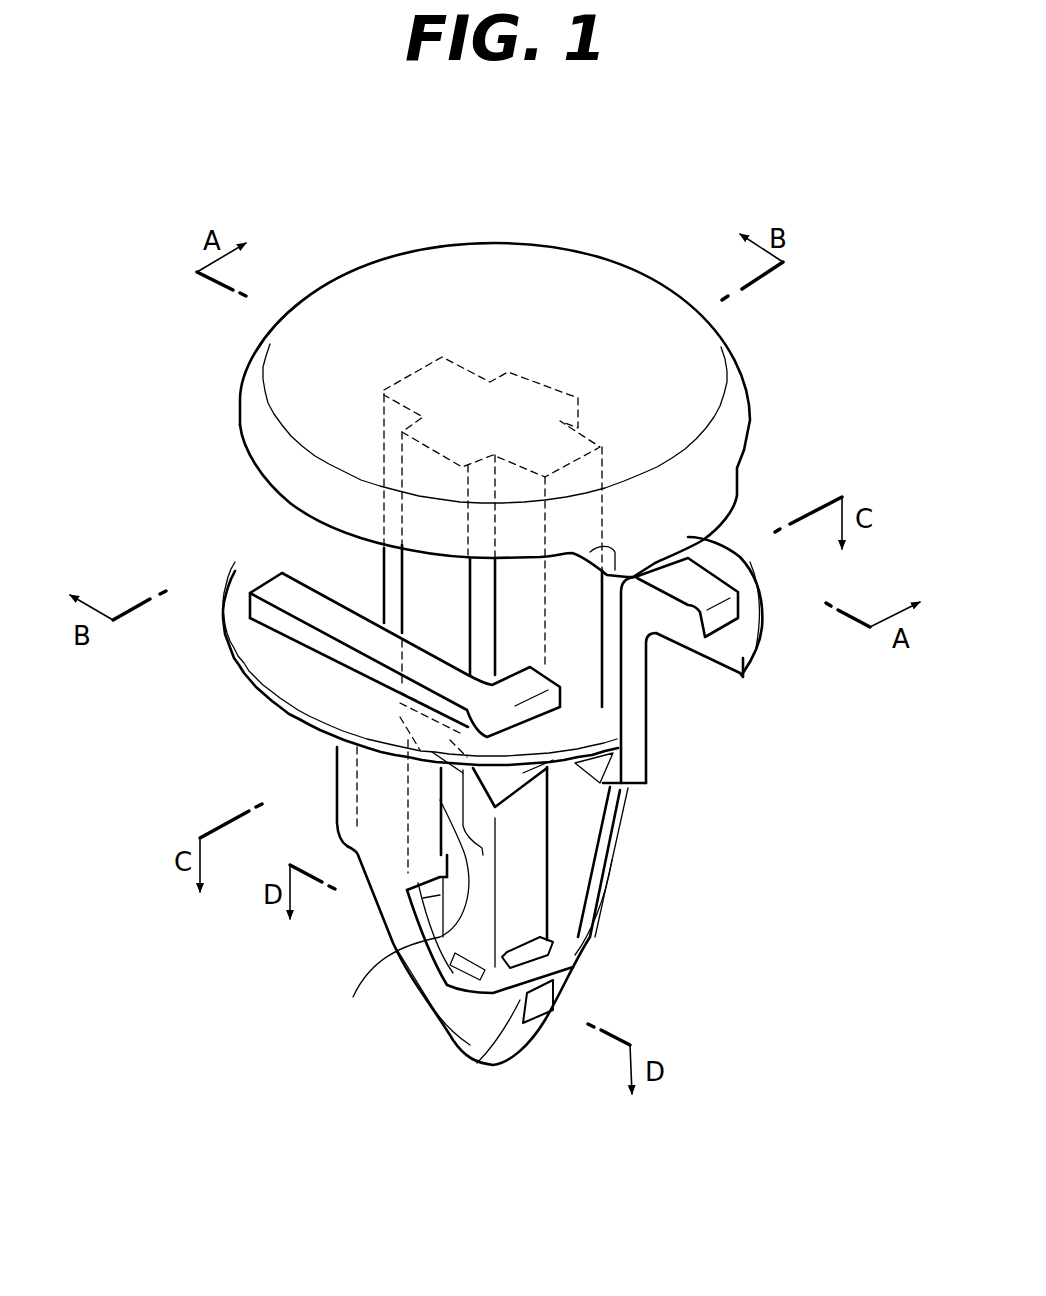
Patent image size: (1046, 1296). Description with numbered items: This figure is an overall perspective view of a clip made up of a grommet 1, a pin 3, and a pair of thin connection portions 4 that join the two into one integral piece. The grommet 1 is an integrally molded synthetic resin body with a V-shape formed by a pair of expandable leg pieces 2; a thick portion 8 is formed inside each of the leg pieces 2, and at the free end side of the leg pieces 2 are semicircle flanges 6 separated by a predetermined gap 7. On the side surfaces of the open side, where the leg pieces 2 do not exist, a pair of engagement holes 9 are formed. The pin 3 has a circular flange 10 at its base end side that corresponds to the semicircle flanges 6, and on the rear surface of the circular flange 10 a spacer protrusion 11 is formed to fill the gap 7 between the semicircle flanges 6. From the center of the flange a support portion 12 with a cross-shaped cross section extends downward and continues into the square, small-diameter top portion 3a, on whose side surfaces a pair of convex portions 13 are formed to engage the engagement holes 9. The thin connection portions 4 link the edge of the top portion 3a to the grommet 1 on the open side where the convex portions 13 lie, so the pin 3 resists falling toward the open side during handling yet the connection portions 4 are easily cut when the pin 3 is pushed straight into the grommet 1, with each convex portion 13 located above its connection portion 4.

The grommet 1 is at (430, 1032).
The leg pieces 2 is at (347, 793).
The pin 3 is at (515, 405).
The top portion 3a is at (580, 927).
The thin connection portions 4 is at (520, 1000).
The semicircle flanges 6 is at (302, 700).
The gap 7 is at (345, 566).
The thick portion 8 is at (353, 997).
The engagement holes 9 is at (533, 1007).
The circular flange 10 is at (445, 268).
The spacer protrusion 11 is at (723, 650).
The support portion 12 is at (528, 618).
The convex portions 13 is at (577, 970).